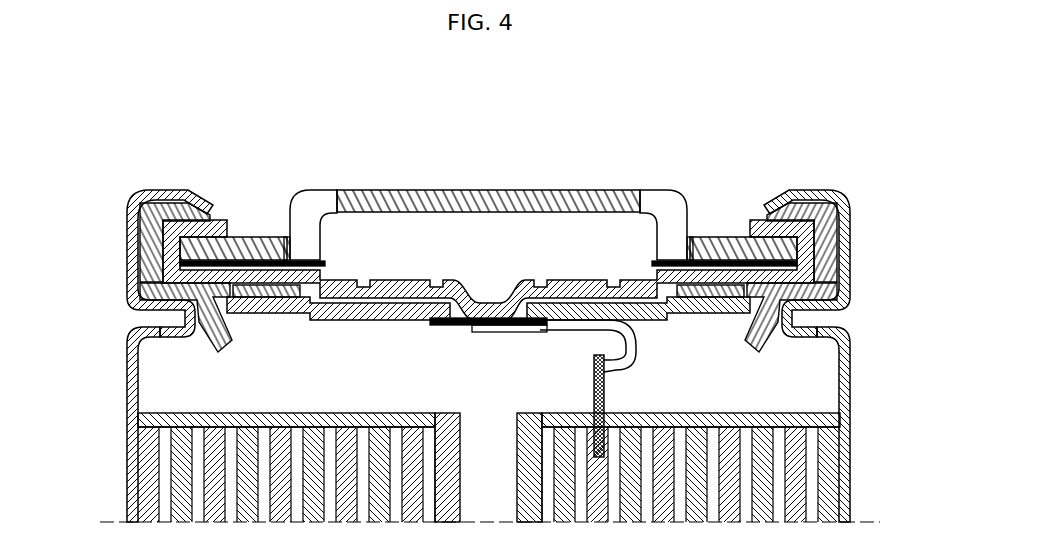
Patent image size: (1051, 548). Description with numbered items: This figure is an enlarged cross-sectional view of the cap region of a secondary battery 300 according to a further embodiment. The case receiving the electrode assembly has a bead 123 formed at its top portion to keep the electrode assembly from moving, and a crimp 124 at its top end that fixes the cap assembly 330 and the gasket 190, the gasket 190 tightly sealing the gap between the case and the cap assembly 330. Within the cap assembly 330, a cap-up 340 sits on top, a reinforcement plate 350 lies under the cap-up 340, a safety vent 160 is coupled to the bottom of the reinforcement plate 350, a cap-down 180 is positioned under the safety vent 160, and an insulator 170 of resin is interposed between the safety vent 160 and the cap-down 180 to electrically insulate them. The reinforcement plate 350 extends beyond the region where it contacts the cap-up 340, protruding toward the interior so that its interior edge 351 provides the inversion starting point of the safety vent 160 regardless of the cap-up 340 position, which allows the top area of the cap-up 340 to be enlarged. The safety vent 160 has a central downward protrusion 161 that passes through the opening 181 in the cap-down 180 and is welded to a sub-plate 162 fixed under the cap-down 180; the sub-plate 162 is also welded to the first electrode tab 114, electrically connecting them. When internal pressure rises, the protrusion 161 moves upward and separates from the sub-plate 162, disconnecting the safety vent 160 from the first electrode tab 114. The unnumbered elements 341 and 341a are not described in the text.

The secondary battery 300 is at (65, 97).
The cap assembly 330 is at (395, 150).
The insulating cover 341 is at (325, 195).
The flange of insulating cover 341a is at (288, 238).
The interior edge of the reinforcement plate 351 is at (240, 235).
The reinforcement plate 350 is at (140, 264).
The cap-up 340 is at (505, 280).
The cap-down 180 is at (427, 280).
The opening 181 is at (473, 310).
The protrusion 161 is at (518, 300).
The sub-plate 162 is at (593, 330).
The safety vent 160 is at (627, 280).
The crimp 124 is at (832, 192).
The gasket 190 is at (835, 248).
The insulator 170 is at (140, 298).
The bead 123 is at (135, 400).
The first electrode tab 114 is at (605, 385).